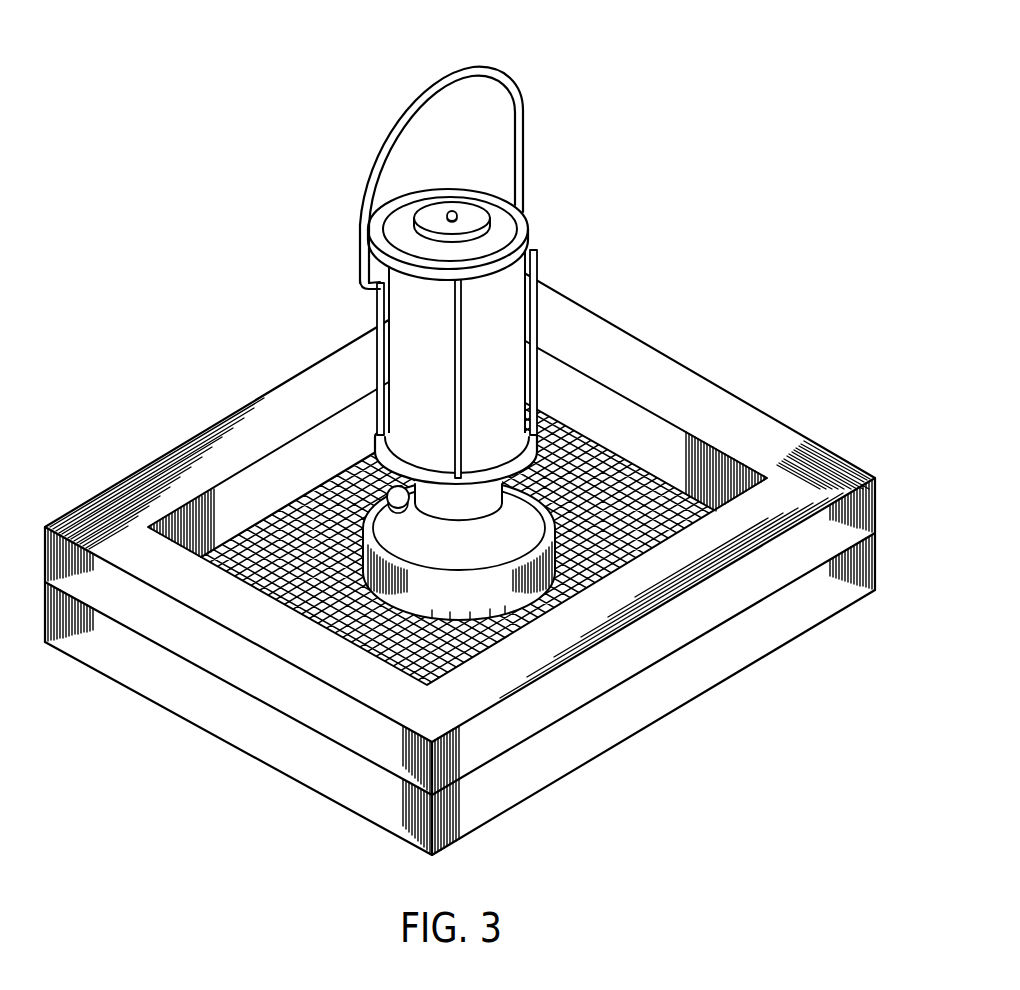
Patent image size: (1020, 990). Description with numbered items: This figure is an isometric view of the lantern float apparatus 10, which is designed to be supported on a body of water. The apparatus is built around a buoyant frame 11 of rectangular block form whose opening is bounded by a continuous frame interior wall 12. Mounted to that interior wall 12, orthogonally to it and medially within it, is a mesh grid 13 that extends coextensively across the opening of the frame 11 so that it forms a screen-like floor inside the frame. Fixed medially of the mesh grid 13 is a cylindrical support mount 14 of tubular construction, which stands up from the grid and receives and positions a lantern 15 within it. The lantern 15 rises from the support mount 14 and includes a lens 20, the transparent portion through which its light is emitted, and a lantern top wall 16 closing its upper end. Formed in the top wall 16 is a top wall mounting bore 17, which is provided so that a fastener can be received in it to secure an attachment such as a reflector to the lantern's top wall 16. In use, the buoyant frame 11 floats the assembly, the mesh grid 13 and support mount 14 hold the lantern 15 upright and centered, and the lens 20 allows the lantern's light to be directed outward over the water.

The lantern float apparatus 10 is at (645, 120).
The buoyant frame 11 is at (649, 336).
The frame interior wall 12 is at (682, 440).
The mesh grid 13 is at (679, 513).
The cylindrical support mount 14 is at (500, 603).
The lantern 15 is at (543, 265).
The lantern top wall 16 is at (520, 224).
The top wall mounting bore 17 is at (451, 212).
The lens 20 is at (507, 352).